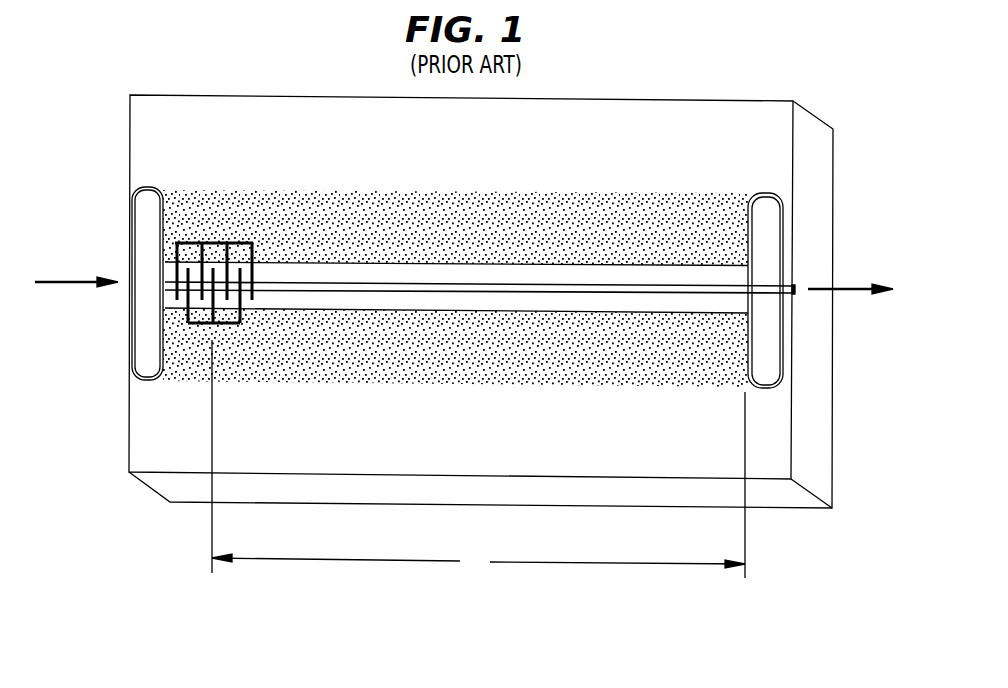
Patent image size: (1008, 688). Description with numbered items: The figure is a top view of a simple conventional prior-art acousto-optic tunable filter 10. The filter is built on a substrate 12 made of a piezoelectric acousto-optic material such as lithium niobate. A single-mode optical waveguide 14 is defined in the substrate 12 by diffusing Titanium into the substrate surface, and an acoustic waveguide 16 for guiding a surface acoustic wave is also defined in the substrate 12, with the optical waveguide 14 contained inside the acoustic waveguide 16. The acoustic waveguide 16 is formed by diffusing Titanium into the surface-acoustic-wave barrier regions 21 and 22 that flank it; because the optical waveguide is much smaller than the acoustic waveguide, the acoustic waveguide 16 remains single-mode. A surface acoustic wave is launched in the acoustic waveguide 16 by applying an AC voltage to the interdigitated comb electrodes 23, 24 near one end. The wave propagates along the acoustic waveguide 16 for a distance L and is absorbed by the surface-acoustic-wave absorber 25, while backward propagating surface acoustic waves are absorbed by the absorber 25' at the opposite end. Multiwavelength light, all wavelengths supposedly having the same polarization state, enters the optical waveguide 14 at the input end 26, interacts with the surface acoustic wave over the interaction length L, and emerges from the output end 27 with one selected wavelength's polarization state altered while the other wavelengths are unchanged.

The acousto-optic tunable filter 10 is at (470, 334).
The substrate 12 is at (665, 100).
The single-mode optical waveguide 14 is at (555, 290).
The acoustic waveguide 16 is at (422, 268).
The surface-acoustic-wave barrier region 21 is at (320, 217).
The surface-acoustic-wave barrier region 22 is at (373, 348).
The interdigitated comb electrode 23 is at (217, 243).
The interdigitated comb electrode 24 is at (195, 326).
The surface-acoustic-wave absorber 25 is at (827, 298).
The absorber 25' is at (113, 266).
The input end 26 is at (130, 285).
The output end 27 is at (802, 295).